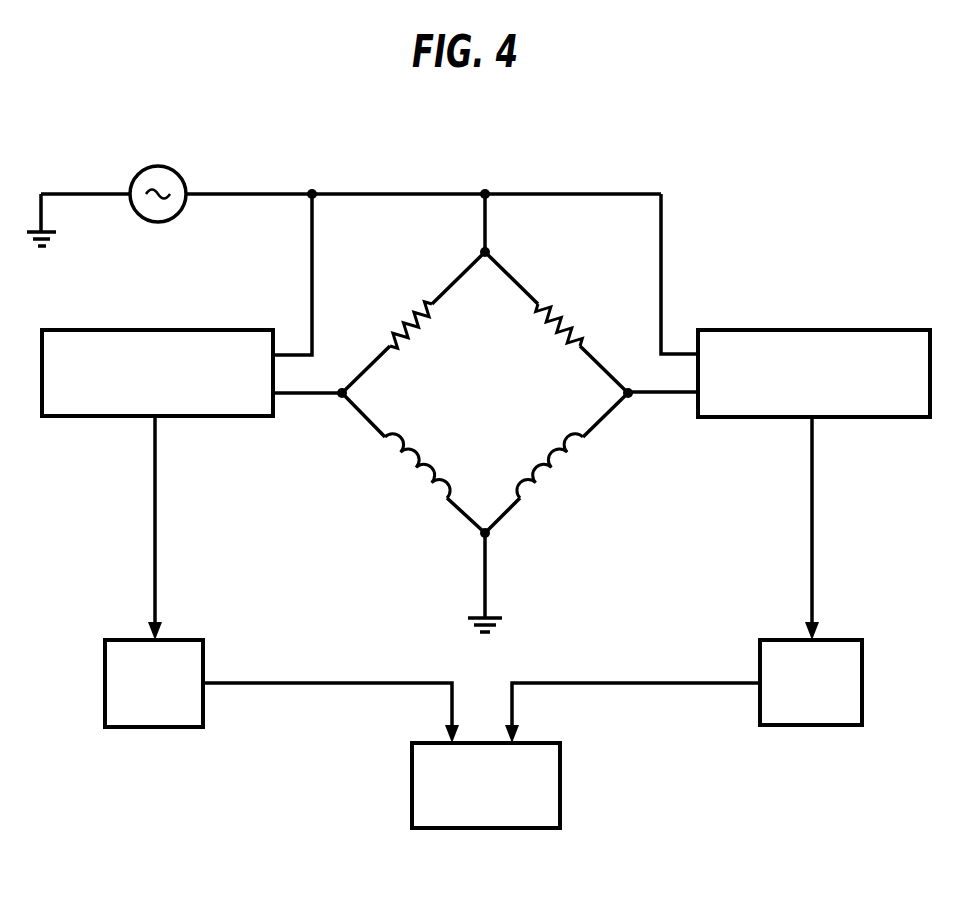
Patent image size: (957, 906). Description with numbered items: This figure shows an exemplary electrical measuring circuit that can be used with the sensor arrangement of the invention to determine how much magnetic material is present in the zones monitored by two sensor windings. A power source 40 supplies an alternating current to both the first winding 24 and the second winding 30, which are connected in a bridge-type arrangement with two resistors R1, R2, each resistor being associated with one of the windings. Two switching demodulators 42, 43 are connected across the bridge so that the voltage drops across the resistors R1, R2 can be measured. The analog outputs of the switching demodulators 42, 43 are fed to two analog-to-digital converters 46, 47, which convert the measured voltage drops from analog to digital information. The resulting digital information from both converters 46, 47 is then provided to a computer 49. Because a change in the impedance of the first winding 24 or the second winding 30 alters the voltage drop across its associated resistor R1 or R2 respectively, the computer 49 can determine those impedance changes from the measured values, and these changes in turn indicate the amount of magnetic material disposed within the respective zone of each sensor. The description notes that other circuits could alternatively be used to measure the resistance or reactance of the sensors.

The power source 40 is at (154, 168).
The switching demodulator 42 is at (188, 330).
The switching demodulator 43 is at (802, 330).
The resistor R1 is at (420, 322).
The resistor R2 is at (540, 317).
The first winding 24 is at (402, 465).
The second winding 30 is at (565, 465).
The analog-to-digital converter 46 is at (185, 640).
The analog-to-digital converter 47 is at (842, 640).
The computer 49 is at (560, 782).